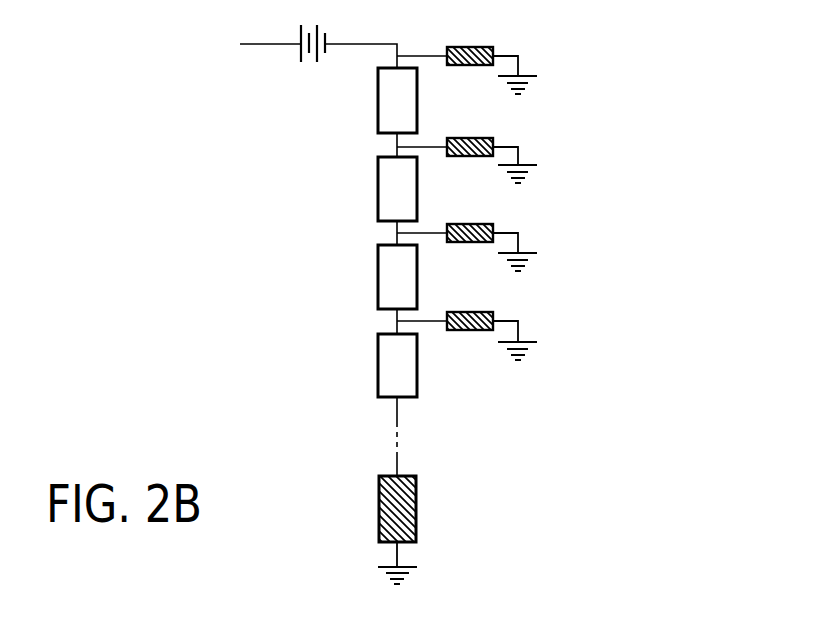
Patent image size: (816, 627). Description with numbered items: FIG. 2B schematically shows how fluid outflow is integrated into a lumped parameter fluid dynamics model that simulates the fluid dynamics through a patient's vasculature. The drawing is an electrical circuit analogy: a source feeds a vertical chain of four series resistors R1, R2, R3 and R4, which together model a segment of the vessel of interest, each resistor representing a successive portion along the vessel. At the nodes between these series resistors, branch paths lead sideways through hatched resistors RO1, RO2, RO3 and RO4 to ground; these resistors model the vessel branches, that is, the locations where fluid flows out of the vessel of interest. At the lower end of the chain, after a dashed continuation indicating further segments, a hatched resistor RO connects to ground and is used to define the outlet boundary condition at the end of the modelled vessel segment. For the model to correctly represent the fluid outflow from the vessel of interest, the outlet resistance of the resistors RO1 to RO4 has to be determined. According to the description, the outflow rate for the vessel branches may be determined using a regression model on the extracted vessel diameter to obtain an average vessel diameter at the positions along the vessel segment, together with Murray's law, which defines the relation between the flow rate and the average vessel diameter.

The resistor R1 is at (362, 100).
The resistor R2 is at (362, 187).
The resistor R3 is at (362, 279).
The resistor R4 is at (362, 363).
The resistor RO1 is at (485, 36).
The resistor RO2 is at (485, 126).
The resistor RO3 is at (486, 214).
The resistor RO4 is at (486, 303).
The resistor RO is at (432, 514).